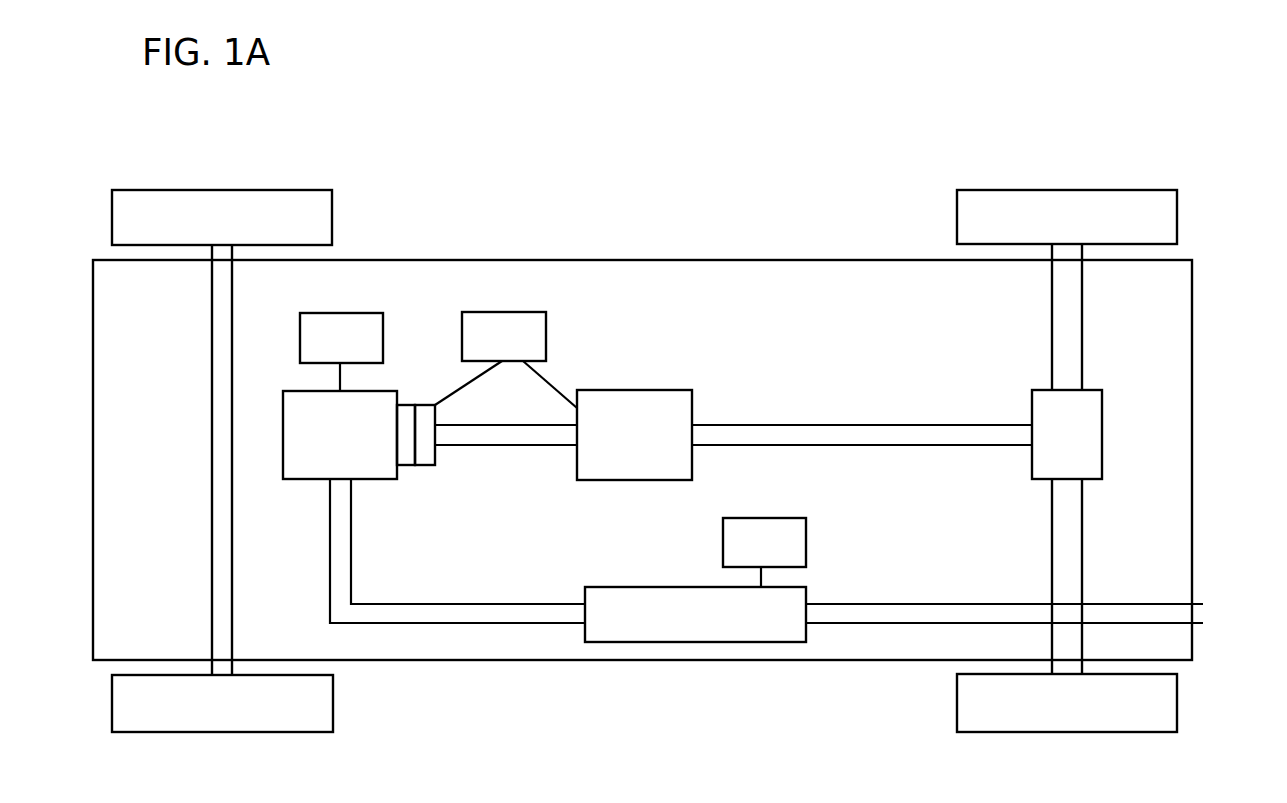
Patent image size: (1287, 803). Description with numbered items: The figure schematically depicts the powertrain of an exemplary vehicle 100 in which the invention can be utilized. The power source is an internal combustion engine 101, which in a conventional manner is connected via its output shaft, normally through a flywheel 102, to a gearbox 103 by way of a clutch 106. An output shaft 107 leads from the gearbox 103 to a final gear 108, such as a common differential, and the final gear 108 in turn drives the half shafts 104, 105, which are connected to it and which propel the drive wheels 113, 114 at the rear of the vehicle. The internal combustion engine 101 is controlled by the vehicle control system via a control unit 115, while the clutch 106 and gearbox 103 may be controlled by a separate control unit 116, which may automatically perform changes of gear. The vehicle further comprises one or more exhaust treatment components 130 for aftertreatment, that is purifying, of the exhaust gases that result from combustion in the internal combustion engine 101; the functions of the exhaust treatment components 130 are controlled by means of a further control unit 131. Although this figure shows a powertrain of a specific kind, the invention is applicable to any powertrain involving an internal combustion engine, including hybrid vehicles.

The vehicle 100 is at (565, 98).
The internal combustion engine 101 is at (310, 470).
The flywheel 102 is at (410, 466).
The gearbox 103 is at (637, 402).
The half shaft 104 is at (1070, 313).
The half shaft 105 is at (1077, 584).
The clutch 106 is at (423, 466).
The output shaft 107 is at (952, 440).
The final gear 108 is at (1097, 429).
The drive wheel 113 is at (1170, 209).
The drive wheel 114 is at (1173, 705).
The control unit 115 is at (342, 347).
The control unit 116 is at (523, 348).
The exhaust treatment component 130 is at (682, 595).
The control unit 131 is at (763, 552).